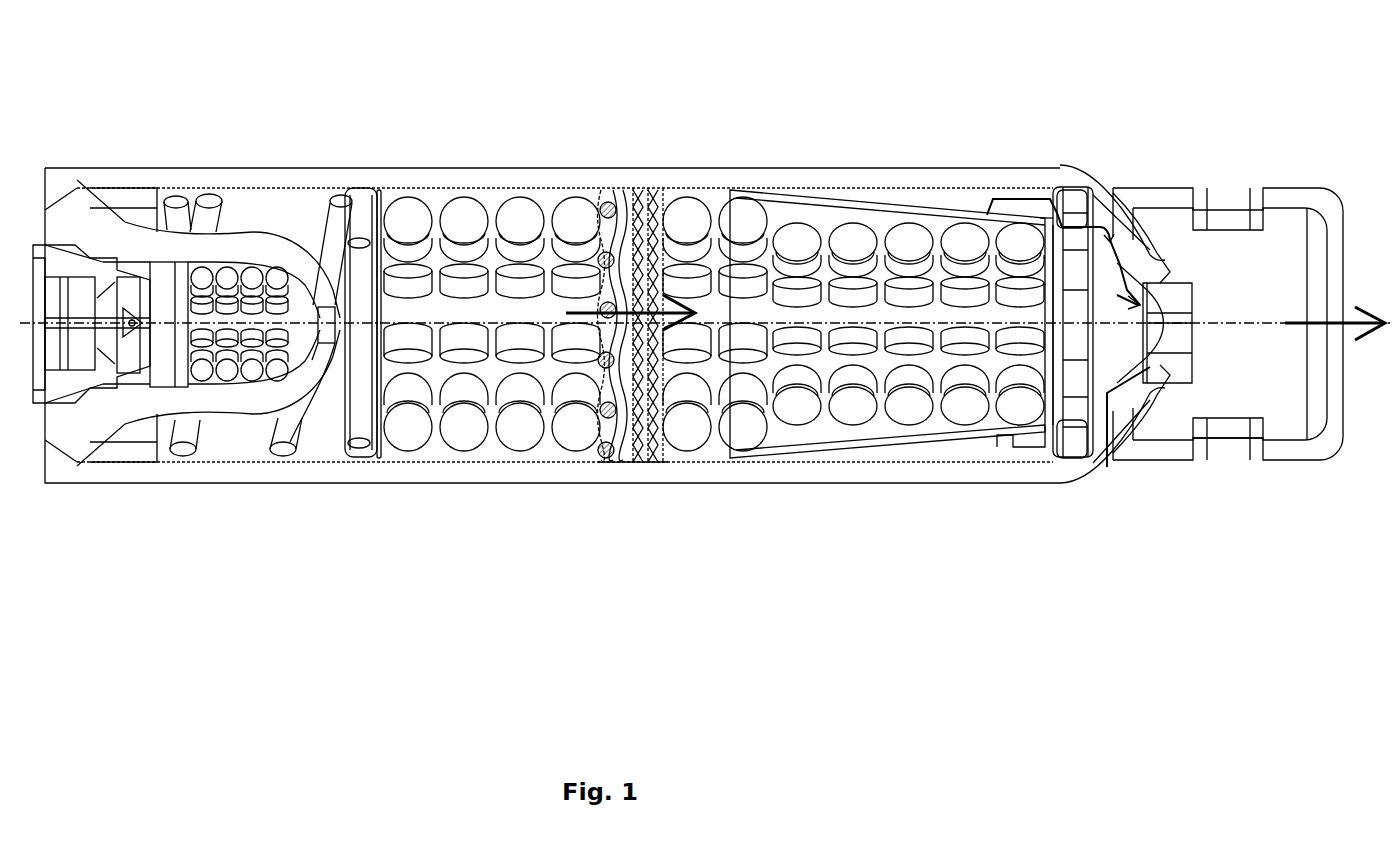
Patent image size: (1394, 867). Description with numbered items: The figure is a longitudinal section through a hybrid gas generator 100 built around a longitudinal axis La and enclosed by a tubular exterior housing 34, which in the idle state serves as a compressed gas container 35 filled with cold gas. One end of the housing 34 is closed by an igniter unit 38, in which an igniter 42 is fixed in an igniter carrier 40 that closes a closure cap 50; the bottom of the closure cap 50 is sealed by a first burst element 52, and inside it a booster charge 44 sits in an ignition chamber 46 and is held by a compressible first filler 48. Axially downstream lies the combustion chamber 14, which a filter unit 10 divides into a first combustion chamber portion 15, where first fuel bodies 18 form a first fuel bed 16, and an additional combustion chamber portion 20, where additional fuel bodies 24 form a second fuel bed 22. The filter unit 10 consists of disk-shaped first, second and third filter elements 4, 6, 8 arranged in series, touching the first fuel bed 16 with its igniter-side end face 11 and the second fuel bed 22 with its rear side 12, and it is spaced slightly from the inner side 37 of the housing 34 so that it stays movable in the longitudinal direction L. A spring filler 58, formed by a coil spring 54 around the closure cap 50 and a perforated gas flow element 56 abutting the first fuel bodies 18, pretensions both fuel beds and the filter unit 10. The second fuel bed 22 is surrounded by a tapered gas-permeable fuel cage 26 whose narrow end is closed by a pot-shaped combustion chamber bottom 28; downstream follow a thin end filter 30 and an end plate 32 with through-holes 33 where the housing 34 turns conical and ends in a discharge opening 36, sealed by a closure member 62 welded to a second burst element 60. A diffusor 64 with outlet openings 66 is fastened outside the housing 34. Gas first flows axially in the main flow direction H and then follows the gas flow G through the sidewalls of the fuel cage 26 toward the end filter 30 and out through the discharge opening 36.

The gas generator 100 is at (972, 588).
The first filter element 4 is at (616, 196).
The second filter element 6 is at (632, 196).
The third filter element 8 is at (650, 196).
The filter unit 10 is at (629, 196).
The igniter-side end face 11 is at (597, 198).
The rear side 12 is at (665, 196).
The combustion chamber 14 is at (386, 455).
The first combustion chamber portion 15 is at (553, 452).
The first fuel bed 16 is at (492, 198).
The first fuel bodies 18 is at (520, 437).
The additional combustion chamber portion 20 is at (718, 450).
The second fuel bed 22 is at (823, 222).
The additional fuel bodies 24 is at (905, 407).
The fuel cage 26 is at (972, 213).
The combustion chamber bottom 28 is at (1025, 442).
The end filter 30 is at (1045, 199).
The end plate 32 is at (1073, 207).
The through-holes 33 is at (1080, 417).
The housing 34 is at (694, 299).
The compressed gas container 35 is at (888, 180).
The discharge opening 36 is at (1155, 270).
The inner side 37 is at (668, 455).
The igniter unit 38 is at (48, 492).
The igniter carrier 40 is at (42, 258).
The igniter 42 is at (158, 345).
The booster charge 44 is at (240, 370).
The ignition chamber 46 is at (302, 352).
The first filler 48 is at (178, 377).
The closure cap 50 is at (67, 205).
The first burst element 52 is at (320, 203).
The spring 54 is at (208, 198).
The gas flow element 56 is at (372, 186).
The spring filler 58 is at (335, 317).
The second burst element 60 is at (1107, 467).
The closure member 62 is at (1185, 368).
The diffusor 64 is at (1322, 452).
The outlet openings 66 is at (1235, 452).
The gas flow G is at (1116, 300).
The main flow direction H is at (617, 312).
The longitudinal direction L is at (1323, 323).
The longitudinal axis La is at (1187, 329).